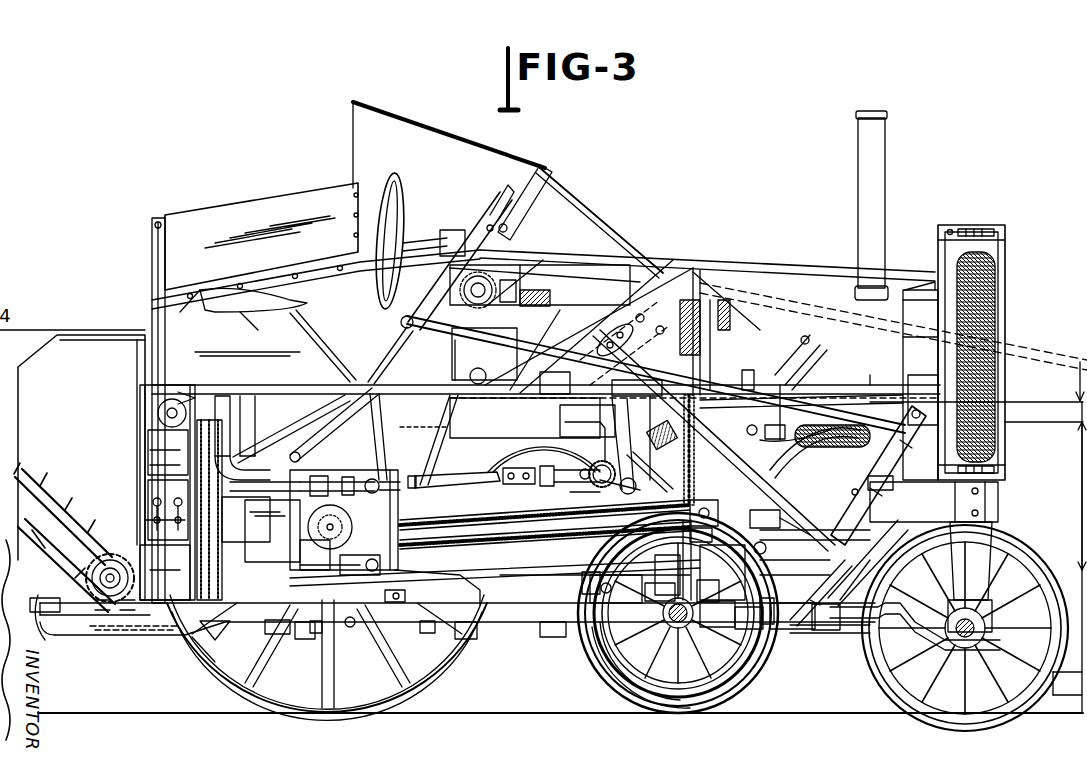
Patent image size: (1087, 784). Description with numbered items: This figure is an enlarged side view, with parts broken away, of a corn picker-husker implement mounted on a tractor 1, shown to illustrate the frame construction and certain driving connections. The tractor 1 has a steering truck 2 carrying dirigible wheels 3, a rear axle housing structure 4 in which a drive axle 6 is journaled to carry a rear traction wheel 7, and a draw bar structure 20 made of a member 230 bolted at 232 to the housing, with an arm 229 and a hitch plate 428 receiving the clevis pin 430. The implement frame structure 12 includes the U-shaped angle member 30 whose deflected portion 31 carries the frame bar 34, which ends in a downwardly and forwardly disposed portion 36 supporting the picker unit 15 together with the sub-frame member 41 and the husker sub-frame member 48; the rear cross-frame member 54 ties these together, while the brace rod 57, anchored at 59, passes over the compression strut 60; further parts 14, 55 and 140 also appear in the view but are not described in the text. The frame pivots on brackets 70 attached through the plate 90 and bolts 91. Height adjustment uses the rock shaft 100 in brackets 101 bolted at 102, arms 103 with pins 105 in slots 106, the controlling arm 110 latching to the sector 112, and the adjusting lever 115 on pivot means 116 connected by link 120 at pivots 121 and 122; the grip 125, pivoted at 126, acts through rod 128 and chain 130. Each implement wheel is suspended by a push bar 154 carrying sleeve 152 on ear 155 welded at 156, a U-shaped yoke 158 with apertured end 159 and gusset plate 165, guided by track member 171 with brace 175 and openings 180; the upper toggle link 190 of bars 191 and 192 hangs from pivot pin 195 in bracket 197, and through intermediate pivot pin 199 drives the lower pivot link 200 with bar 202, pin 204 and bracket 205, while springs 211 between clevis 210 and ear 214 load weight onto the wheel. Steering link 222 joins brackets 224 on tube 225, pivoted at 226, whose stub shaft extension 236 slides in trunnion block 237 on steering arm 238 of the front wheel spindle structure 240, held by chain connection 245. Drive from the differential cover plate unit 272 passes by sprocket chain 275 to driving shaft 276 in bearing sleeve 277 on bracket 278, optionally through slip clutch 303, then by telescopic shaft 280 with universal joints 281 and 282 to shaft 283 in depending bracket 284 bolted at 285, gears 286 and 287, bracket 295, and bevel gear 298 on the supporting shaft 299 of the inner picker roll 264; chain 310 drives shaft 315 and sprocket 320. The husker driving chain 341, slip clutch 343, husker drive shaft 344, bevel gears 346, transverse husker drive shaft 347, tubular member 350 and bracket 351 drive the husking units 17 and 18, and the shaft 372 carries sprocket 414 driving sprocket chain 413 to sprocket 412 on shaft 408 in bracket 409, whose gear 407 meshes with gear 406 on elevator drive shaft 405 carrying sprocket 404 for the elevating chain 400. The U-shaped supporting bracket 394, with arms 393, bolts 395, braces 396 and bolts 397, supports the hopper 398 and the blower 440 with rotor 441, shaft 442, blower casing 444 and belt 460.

The tractor 1 is at (806, 289).
The steering truck 2 is at (985, 540).
The dirigible wheels 3 is at (920, 712).
The rear axle housing structure 4 is at (1071, 381).
The drive axle 6 is at (392, 372).
The rear traction wheel 7 is at (432, 668).
The implement frame structure 12 is at (502, 376).
The frame bracket 14 is at (278, 632).
The picker unit 15 is at (682, 632).
The husking unit 17 is at (316, 280).
The husking unit 18 is at (717, 615).
The draw bar structure 20 is at (164, 638).
The U-shaped angle member 30 is at (1030, 425).
The laterally outwardly deflected portion 31 is at (566, 412).
The frame bar 34 is at (594, 345).
The downwardly and forwardly disposed portion 36 is at (880, 495).
The sub-frame member 41 is at (880, 538).
The husker sub-frame member 48 is at (554, 380).
The cross-frame member 54 is at (160, 388).
The tie rod 55 is at (815, 533).
The brace rod 57 is at (522, 325).
The anchorage 59 is at (670, 418).
The compression strut 60 is at (705, 270).
The bracket 70 is at (427, 459).
The plate 90 is at (355, 540).
The bolts 91 is at (323, 563).
The rock shaft 100 is at (795, 562).
The bracket 101 is at (765, 543).
The bolts 102 is at (792, 522).
The arm 103 is at (795, 577).
The pin 105 is at (824, 593).
The slot 106 is at (858, 580).
The controlling arm 110 is at (880, 450).
The sector 112 is at (891, 489).
The adjusting lever 115 is at (370, 372).
The pivot means 116 is at (290, 442).
The link 120 is at (625, 342).
The pivot connection 121 is at (402, 322).
The pivot member 122 is at (925, 410).
The grip 125 is at (492, 208).
The pivot 126 is at (507, 229).
The rod 128 is at (486, 228).
The chain 130 is at (396, 268).
The bracket 140 is at (748, 376).
The sleeve 152 is at (735, 403).
The push bar 154 is at (540, 565).
The bracket or ear 155 is at (712, 592).
The weld 156 is at (659, 564).
The U-shaped yoke 158 is at (362, 572).
The apertured end 159 is at (404, 591).
The gusset plate 165 is at (410, 575).
The track member 171 is at (770, 626).
The brace 175 is at (814, 606).
The aligned openings 180 is at (759, 617).
The upper toggle link 190 is at (608, 446).
The bar 191 is at (650, 471).
The bar 192 is at (650, 435).
The pivot pin 195 is at (616, 330).
The bracket 197 is at (657, 339).
The intermediate pivot pin 199 is at (717, 510).
The lower pivot link 200 is at (595, 554).
The bar 202 is at (655, 591).
The pin 204 is at (600, 606).
The bracket 205 is at (582, 585).
The U-shaped clevis 210 is at (703, 530).
The springs 211 is at (525, 532).
The ear 214 is at (450, 520).
The adjustable steering link 222 is at (600, 640).
The bracket 224 is at (598, 660).
The tube 225 is at (497, 623).
The pivot 226 is at (482, 630).
The arm 229 is at (426, 628).
The drawbar member 230 is at (350, 628).
The bolts 232 is at (314, 635).
The stub shaft extension 236 is at (830, 630).
The trunnion block 237 is at (850, 632).
The steering arm 238 is at (912, 632).
The front wheel spindle structure 240 is at (987, 618).
The chain connection 245 is at (800, 629).
The inner picker roll 264 is at (835, 470).
The differential cover plate unit 272 is at (327, 569).
The sprocket chain 275 is at (241, 519).
The driving shaft 276 is at (337, 476).
The bearing sleeve 277 is at (280, 482).
The bracket 278 is at (255, 536).
The telescopic shaft 280 is at (480, 476).
The universal joint 281 is at (378, 482).
The universal joint 282 is at (551, 465).
The shaft 283 is at (600, 484).
The depending bracket 284 is at (600, 466).
The bolts 285 is at (637, 388).
The gear 286 is at (585, 499).
The gear 287 is at (765, 523).
The bracket 295 is at (585, 439).
The bevel gear 298 is at (795, 412).
The supporting shaft 299 is at (750, 418).
The slip clutch 303 is at (772, 419).
The chain 310 is at (805, 365).
The shaft 315 is at (828, 396).
The sprocket 320 is at (810, 340).
The husker driving chain 341 is at (712, 325).
The slip clutch 343 is at (740, 276).
The husker drive shaft 344 is at (548, 290).
The bevel gears 346 is at (520, 282).
The transverse husker drive shaft 347 is at (484, 282).
The tubular member 350 is at (560, 290).
The bracket 351 is at (505, 305).
The shaft 372 is at (180, 392).
The rearwardly extending arm 393 is at (213, 639).
The U-shaped supporting bracket 394 is at (215, 396).
The bolts 395 is at (245, 342).
The brace 396 is at (300, 420).
The bolts 397 is at (322, 352).
The hopper 398 is at (70, 345).
The elevating chain 400 is at (40, 480).
The sprocket 404 is at (150, 548).
The elevator drive shaft 405 is at (96, 600).
The gear 406 is at (108, 605).
The gear 407 is at (150, 565).
The shaft 408 is at (135, 600).
The bracket 409 is at (142, 605).
The sprocket 412 is at (148, 518).
The sprocket chain 413 is at (158, 420).
The sprocket 414 is at (160, 405).
The hitch plate 428 is at (45, 617).
The clevis pin 430 is at (70, 598).
The blower 440 is at (148, 438).
The rotor 441 is at (150, 452).
The shaft 442 is at (150, 467).
The blower casing 444 is at (148, 497).
The belt 460 is at (245, 630).